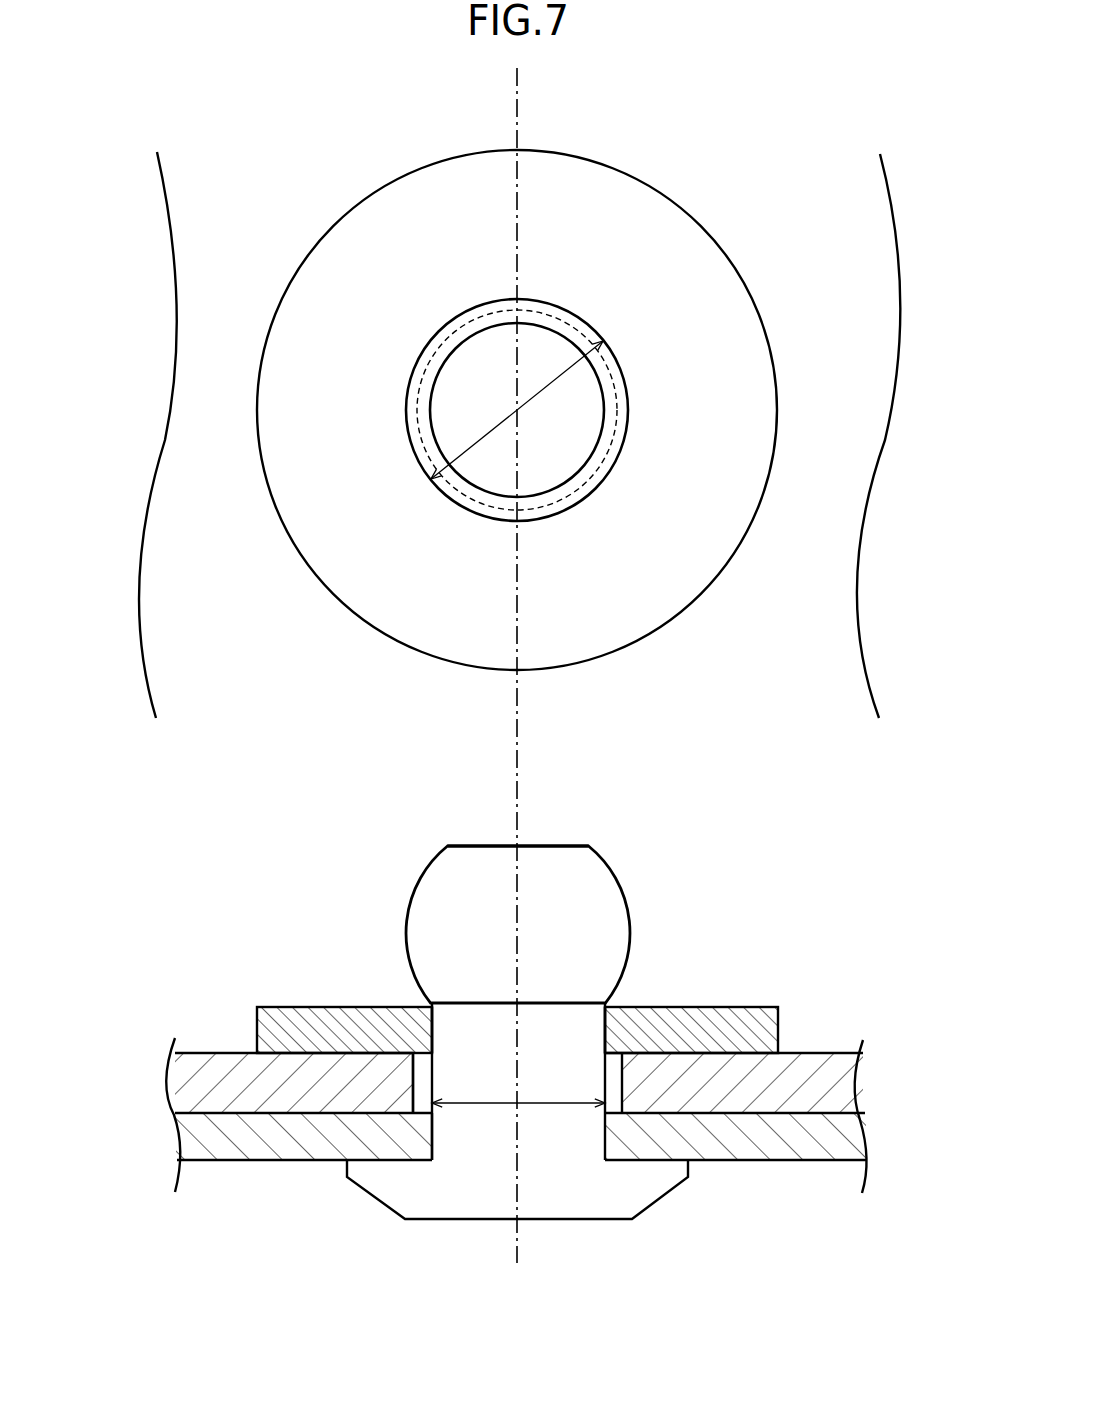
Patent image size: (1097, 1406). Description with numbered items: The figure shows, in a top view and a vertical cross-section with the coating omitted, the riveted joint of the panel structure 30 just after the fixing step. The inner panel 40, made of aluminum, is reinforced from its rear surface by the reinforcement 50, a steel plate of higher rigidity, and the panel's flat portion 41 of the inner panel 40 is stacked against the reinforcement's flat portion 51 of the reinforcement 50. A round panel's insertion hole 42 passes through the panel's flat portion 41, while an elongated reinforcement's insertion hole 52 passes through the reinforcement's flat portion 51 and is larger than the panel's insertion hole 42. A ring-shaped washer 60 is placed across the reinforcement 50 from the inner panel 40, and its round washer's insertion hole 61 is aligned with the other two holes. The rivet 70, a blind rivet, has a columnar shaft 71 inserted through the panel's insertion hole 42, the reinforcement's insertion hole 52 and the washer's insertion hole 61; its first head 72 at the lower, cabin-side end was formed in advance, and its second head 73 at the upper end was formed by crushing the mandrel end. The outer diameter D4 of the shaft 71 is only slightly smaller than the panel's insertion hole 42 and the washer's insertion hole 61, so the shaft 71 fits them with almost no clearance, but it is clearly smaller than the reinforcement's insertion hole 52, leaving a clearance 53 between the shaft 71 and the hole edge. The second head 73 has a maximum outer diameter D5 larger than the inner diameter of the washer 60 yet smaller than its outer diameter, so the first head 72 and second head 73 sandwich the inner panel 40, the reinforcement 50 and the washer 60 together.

The panel structure 30 is at (905, 147).
The inner panel 40 is at (237, 1162).
The panel's flat portion 41 is at (818, 1148).
The panel's insertion hole 42 is at (432, 1137).
The reinforcement 50 is at (170, 220).
The reinforcement's flat portion 51 is at (865, 203).
The reinforcement's insertion hole 52 is at (455, 338).
The clearance 53 is at (615, 1082).
The washer 60 is at (337, 219).
The washer's insertion hole 61 is at (596, 1037).
The rivet 70 is at (560, 303).
The shaft 71 is at (453, 1015).
The first head 72 is at (593, 1200).
The second head 73 is at (421, 409).
The outer diameter of the shaft D4 is at (552, 1105).
The maximum outer diameter of the second head D5 is at (537, 397).